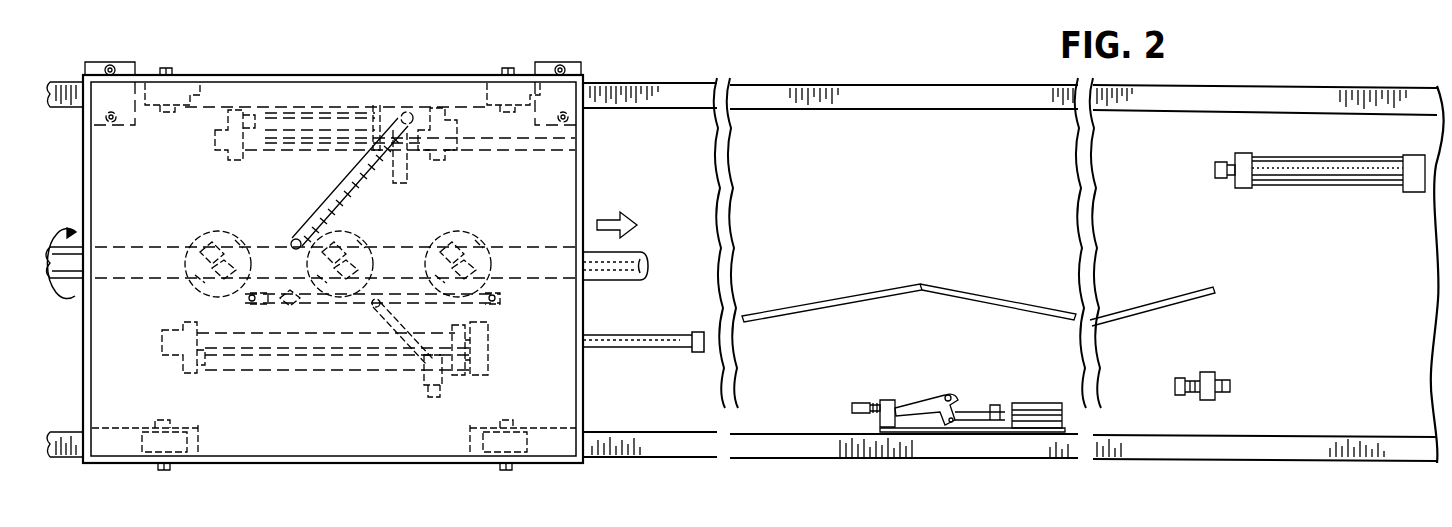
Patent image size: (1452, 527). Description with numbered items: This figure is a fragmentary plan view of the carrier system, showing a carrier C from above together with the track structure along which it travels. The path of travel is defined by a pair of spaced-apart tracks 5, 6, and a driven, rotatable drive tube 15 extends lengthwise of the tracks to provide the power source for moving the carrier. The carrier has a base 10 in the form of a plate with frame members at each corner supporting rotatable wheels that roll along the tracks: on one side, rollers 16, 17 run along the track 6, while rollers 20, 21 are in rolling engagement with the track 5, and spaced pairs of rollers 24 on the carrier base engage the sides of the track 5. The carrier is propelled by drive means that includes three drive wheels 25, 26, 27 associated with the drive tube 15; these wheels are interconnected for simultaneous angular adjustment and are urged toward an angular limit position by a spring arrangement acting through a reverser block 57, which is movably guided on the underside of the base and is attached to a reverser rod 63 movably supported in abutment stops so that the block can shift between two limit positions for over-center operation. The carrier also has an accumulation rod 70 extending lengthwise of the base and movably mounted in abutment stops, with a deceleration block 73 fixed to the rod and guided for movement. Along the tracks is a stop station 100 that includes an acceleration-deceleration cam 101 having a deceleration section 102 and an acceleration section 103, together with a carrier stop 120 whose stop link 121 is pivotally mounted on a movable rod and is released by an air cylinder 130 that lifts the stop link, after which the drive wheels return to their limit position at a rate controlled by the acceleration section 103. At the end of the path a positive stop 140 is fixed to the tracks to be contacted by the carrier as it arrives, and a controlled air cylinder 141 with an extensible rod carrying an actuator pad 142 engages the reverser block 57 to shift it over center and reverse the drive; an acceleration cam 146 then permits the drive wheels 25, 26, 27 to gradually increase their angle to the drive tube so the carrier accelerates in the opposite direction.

The carrier C is at (344, 68).
The track 5 is at (887, 90).
The track 6 is at (883, 457).
The carrier base 10 is at (198, 200).
The drive tube 15 is at (637, 247).
The roller 16 is at (202, 442).
The roller 17 is at (537, 425).
The roller 20 is at (195, 95).
The roller 21 is at (523, 82).
The rollers 24 is at (118, 72).
The drive wheel 25 is at (240, 242).
The drive wheel 26 is at (348, 240).
The drive wheel 27 is at (478, 246).
The reverser block 57 is at (418, 112).
The reverser rod 63 is at (500, 150).
The accumulation rod 70 is at (657, 347).
The deceleration block 73 is at (408, 386).
The stop station 100 is at (909, 269).
The acceleration-deceleration cam 101 is at (892, 298).
The deceleration section 102 is at (825, 300).
The acceleration section 103 is at (1018, 302).
The carrier stop 120 is at (959, 384).
The stop link 121 is at (920, 398).
The air cylinder 130 is at (1035, 403).
The positive stop 140 is at (1212, 400).
The air cylinder 141 is at (1338, 186).
The actuator pad 142 is at (1221, 184).
The acceleration cam 146 is at (1177, 308).